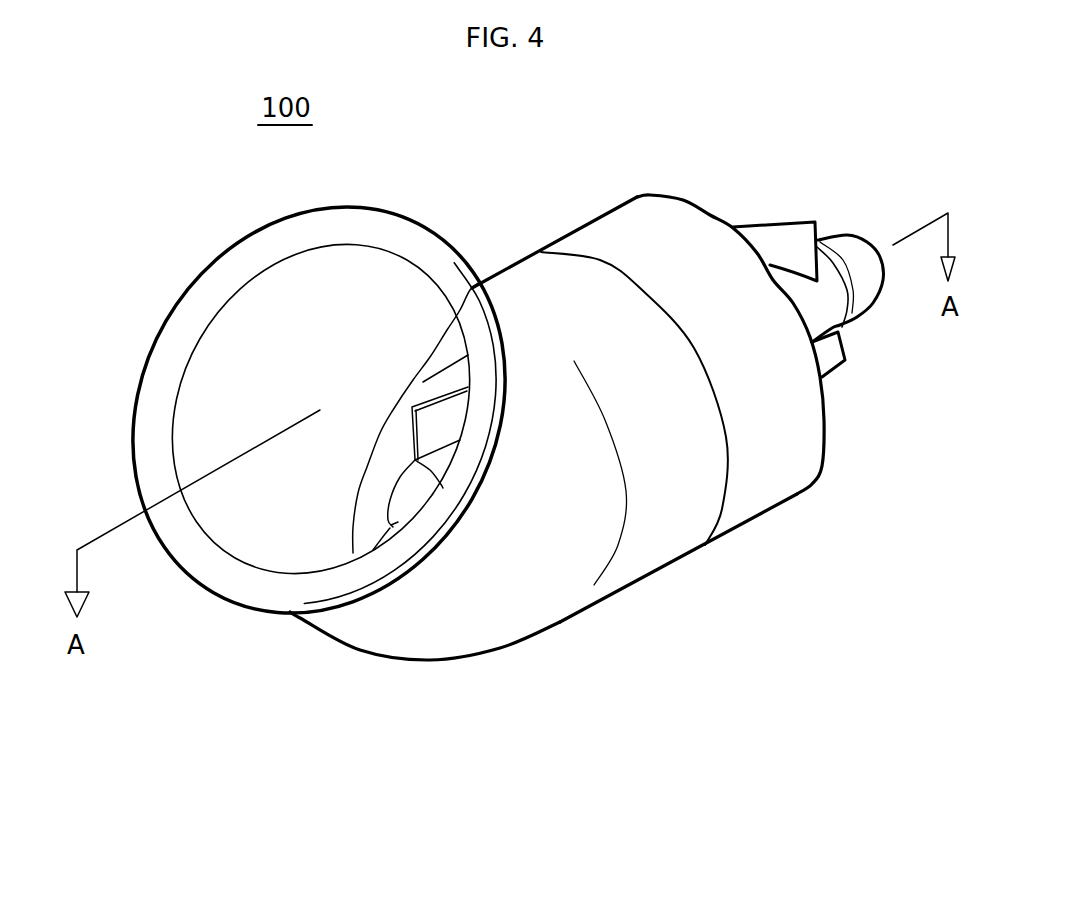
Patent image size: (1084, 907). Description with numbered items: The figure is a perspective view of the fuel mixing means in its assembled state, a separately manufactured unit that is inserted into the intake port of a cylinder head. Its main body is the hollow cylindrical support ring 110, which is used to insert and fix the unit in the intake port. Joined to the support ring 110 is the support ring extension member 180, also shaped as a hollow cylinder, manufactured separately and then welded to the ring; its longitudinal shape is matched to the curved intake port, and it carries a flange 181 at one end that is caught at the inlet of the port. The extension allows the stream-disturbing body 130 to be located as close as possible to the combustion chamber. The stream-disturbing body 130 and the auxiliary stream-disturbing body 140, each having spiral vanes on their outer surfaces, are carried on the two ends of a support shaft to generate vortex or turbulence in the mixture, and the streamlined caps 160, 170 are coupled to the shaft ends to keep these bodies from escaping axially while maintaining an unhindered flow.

The support ring 110 is at (758, 504).
The stream-disturbing body 130 is at (428, 407).
The auxiliary stream-disturbing body 140 is at (760, 232).
The cap 160 is at (353, 553).
The cap 170 is at (847, 243).
The support ring extension member 180 is at (533, 633).
The flange 181 is at (173, 330).